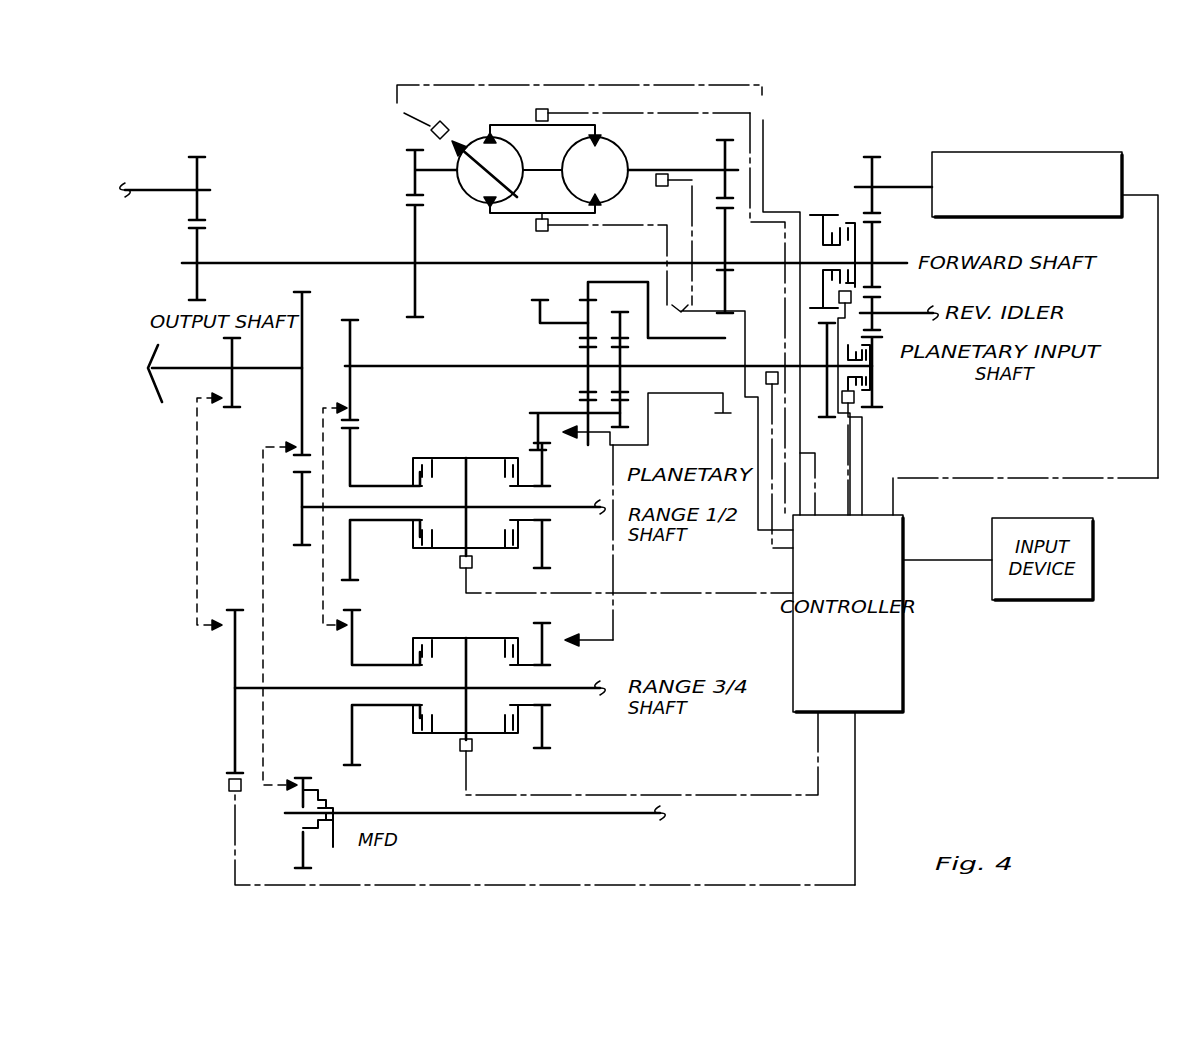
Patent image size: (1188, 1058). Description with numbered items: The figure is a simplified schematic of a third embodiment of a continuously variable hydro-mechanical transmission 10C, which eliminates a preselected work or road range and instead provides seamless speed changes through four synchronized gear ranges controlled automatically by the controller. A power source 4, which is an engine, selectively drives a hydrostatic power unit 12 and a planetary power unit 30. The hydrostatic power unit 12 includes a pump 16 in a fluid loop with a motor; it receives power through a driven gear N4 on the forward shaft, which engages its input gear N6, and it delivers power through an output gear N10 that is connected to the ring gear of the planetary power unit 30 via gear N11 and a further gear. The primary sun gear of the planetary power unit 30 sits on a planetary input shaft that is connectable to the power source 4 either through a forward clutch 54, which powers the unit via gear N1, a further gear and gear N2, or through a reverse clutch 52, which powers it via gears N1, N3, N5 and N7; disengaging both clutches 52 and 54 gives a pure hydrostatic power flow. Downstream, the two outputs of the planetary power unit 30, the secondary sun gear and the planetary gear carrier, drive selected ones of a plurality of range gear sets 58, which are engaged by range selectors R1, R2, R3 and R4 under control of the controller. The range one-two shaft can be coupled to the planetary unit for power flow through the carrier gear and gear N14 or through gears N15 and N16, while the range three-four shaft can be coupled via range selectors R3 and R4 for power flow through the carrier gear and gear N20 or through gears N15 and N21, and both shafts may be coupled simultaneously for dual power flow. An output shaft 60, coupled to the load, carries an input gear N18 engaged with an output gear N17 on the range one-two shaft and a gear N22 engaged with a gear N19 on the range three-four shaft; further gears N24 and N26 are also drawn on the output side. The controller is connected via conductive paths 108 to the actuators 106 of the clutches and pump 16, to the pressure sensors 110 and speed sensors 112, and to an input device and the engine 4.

The power source 4 is at (1122, 170).
The hydro-mechanical transmission 10C is at (920, 109).
The hydrostatic power unit 12 is at (394, 123).
The pump 16 is at (472, 203).
The planetary power unit 30 is at (495, 382).
The reverse clutch 52 is at (862, 388).
The forward clutch 54 is at (846, 226).
The range gear sets 58 is at (660, 620).
The output shaft 60 is at (275, 372).
The actuators 106 is at (431, 131).
The conductive paths 108 is at (762, 88).
The pressure sensors 110 is at (505, 246).
The speed sensors 112 is at (656, 186).
The gear N1 is at (892, 182).
The gear N2 is at (827, 385).
The gear N3 is at (892, 308).
The driven gear N4 is at (434, 261).
The gear N5 is at (892, 254).
The input gear N6 is at (417, 172).
The gear N7 is at (893, 372).
The output gear N10 is at (702, 164).
The gear N11 is at (749, 260).
The gear N14 is at (565, 506).
The gear N15 is at (381, 403).
The gear N16 is at (381, 550).
The output gear N17 is at (296, 523).
The input gear N18 is at (285, 373).
The gear N19 is at (210, 691).
The gear N20 is at (577, 686).
The gear N21 is at (361, 687).
The gear N22 is at (207, 372).
The MFD gear N24 is at (291, 823).
The output shaft gear N26 is at (226, 228).
The range selector R1 is at (505, 515).
The range selector R2 is at (435, 515).
The range selector R3 is at (505, 698).
The range selector R4 is at (435, 698).